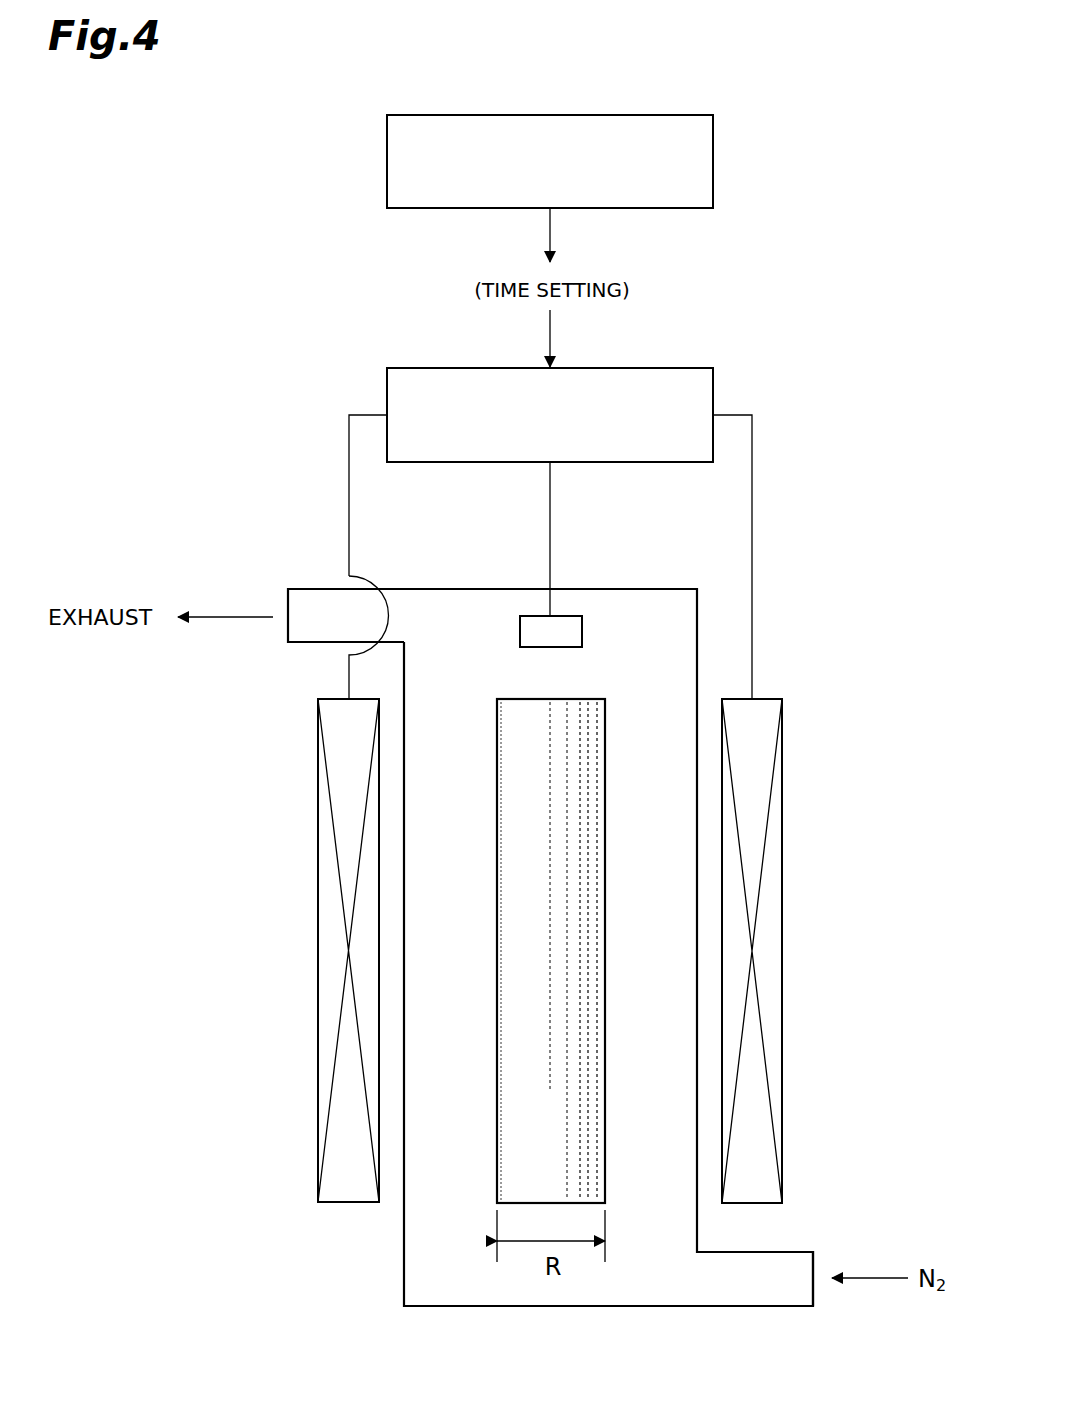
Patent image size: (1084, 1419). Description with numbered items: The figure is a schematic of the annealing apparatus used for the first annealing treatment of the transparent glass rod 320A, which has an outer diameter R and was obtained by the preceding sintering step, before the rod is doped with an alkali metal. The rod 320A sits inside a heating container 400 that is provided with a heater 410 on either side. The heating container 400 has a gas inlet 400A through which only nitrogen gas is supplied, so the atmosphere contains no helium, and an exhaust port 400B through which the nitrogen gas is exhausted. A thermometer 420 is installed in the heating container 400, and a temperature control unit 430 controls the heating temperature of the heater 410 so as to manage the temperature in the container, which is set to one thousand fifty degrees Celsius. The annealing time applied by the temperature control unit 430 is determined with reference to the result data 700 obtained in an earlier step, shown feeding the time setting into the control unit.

The result data 700 is at (713, 160).
The temperature control unit 430 is at (673, 367).
The thermometer 420 is at (572, 615).
The heating container 400 is at (567, 1307).
The gas inlet 400A is at (773, 1296).
The exhaust port 400B is at (307, 600).
The heater 410 is at (318, 941).
The transparent glass rod 320A is at (523, 1185).